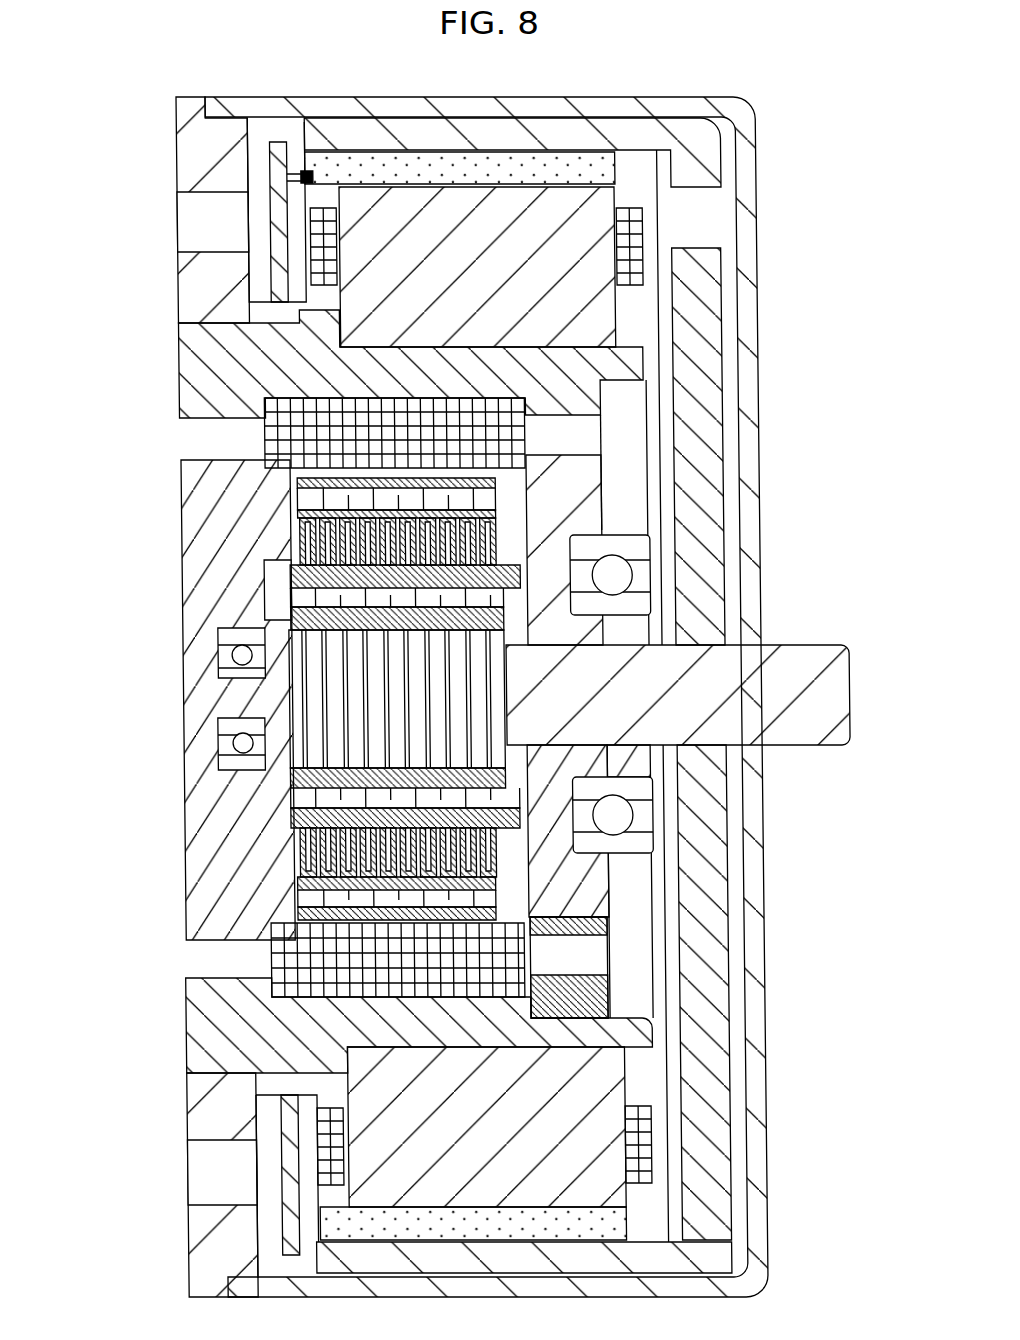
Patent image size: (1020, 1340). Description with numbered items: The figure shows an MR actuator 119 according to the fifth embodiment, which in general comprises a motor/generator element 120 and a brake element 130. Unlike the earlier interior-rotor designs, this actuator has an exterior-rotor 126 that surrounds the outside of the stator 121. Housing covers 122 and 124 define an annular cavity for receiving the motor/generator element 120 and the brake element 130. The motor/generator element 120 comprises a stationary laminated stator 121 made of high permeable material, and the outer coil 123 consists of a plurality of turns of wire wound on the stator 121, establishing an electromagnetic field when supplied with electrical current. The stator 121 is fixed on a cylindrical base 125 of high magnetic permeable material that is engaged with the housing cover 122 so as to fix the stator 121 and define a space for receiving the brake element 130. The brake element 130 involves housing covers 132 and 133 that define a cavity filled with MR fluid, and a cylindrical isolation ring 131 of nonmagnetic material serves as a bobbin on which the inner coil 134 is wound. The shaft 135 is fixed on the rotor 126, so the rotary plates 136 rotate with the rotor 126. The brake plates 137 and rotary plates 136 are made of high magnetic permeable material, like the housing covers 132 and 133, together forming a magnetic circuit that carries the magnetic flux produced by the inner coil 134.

The MR actuator 119 is at (770, 88).
The motor/generator element 120 is at (293, 1147).
The stator 121 is at (578, 237).
The housing cover 122 is at (200, 150).
The outer coil 123 is at (308, 247).
The housing cover 124 is at (745, 292).
The cylindrical base 125 is at (234, 355).
The exterior-rotor 126 is at (692, 385).
The brake element 130 is at (206, 707).
The cylindrical isolation ring 131 is at (556, 898).
The housing cover 132 is at (291, 922).
The housing cover 133 is at (220, 538).
The inner coil 134 is at (491, 430).
The shaft 135 is at (701, 690).
The rotary plates 136 is at (303, 537).
The brake plates 137 is at (481, 880).